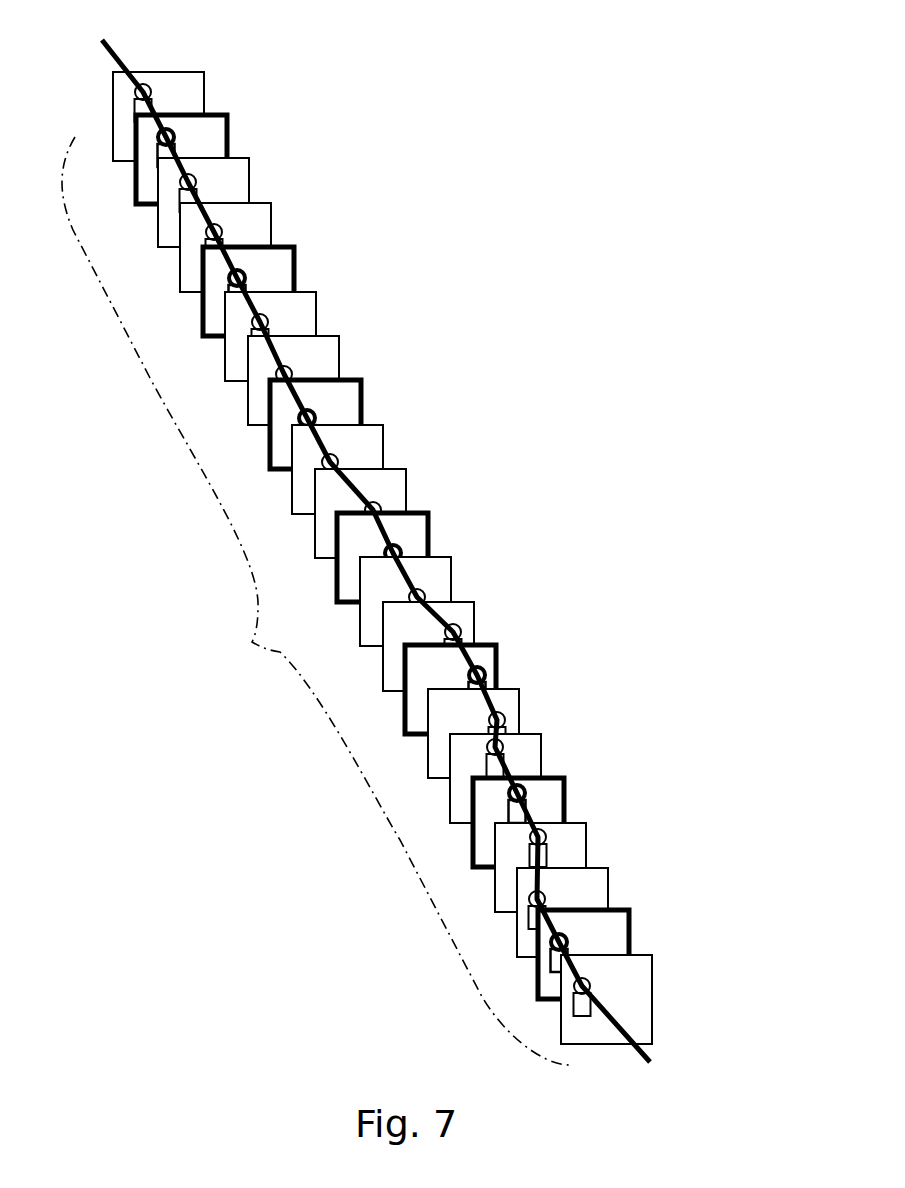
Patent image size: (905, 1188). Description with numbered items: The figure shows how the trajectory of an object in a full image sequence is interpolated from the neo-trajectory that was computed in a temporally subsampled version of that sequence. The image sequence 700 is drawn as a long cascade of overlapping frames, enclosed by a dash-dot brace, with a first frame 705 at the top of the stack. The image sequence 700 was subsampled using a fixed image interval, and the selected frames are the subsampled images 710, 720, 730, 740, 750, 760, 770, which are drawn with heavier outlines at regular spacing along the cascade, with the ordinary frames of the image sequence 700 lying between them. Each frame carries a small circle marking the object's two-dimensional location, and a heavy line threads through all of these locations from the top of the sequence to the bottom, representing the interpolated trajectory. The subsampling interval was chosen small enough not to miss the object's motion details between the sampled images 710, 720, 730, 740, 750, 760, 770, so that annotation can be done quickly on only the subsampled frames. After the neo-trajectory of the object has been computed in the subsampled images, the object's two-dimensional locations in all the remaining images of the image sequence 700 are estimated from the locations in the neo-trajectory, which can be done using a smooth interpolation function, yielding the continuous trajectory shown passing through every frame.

The image sequence 700 is at (250, 644).
The initial image frame 705 is at (112, 47).
The subsampled image 710 is at (227, 147).
The subsampled image 720 is at (294, 267).
The subsampled image 730 is at (362, 399).
The subsampled image 740 is at (430, 531).
The subsampled image 750 is at (497, 654).
The subsampled image 760 is at (563, 797).
The subsampled image 770 is at (630, 928).